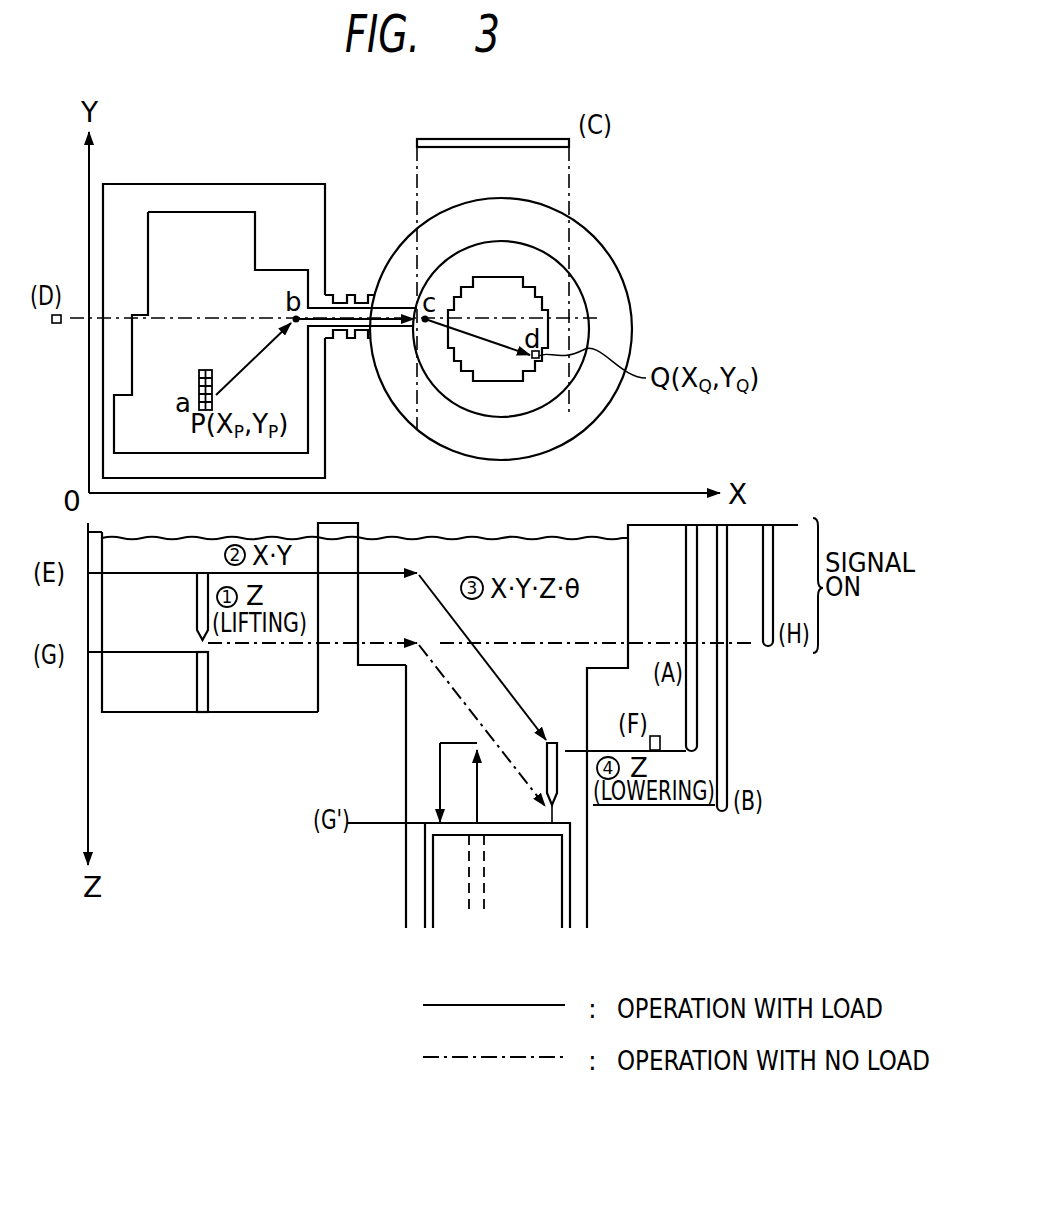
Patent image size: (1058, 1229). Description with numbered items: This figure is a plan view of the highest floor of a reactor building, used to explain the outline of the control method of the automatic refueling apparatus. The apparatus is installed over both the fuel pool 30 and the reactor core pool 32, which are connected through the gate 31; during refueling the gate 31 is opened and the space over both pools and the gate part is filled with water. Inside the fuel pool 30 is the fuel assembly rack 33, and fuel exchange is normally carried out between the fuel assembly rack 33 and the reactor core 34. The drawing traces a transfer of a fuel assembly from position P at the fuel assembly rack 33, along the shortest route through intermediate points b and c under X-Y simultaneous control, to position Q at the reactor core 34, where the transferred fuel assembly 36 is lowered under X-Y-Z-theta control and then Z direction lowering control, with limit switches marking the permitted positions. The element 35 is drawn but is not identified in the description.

The fuel pool 30 is at (182, 545).
The gate 31 is at (350, 295).
The reactor core pool 32 is at (615, 297).
The fuel assembly rack 33 is at (199, 385).
The reactor core 34 is at (517, 292).
The lowering station 35 is at (425, 908).
The transferred fuel assembly 36 is at (197, 610).